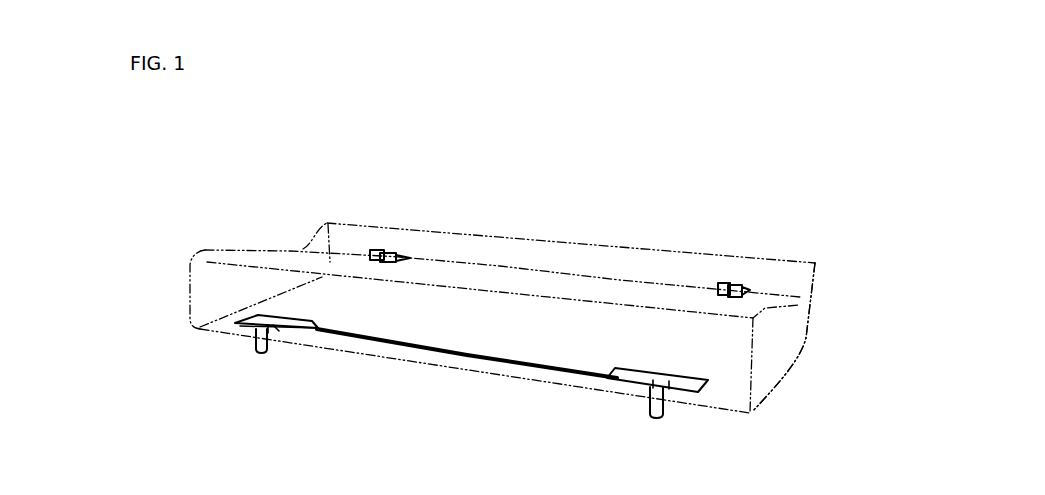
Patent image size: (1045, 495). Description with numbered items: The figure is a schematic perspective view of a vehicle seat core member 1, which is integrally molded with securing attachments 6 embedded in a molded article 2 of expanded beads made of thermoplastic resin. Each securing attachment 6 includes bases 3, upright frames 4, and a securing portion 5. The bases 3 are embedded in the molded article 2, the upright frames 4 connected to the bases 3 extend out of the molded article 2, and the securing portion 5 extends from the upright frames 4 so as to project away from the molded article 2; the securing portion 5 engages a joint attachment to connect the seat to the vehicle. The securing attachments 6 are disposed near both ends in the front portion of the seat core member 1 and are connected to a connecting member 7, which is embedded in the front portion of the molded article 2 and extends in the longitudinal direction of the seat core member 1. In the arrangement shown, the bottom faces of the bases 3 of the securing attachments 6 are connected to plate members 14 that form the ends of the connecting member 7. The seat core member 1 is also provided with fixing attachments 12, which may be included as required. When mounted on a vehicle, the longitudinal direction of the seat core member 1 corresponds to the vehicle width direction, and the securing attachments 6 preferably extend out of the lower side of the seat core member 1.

The vehicle seat core member 1 is at (491, 233).
The molded article of expanded beads made of thermoplastic resin 2 is at (787, 342).
The base 3 is at (318, 347).
The upright frame 4 is at (270, 341).
The securing portion 5 is at (259, 352).
The securing attachment 6 is at (257, 342).
The connecting member 7 is at (478, 358).
The fixing attachment 12 is at (383, 253).
The plate member 14 is at (290, 320).